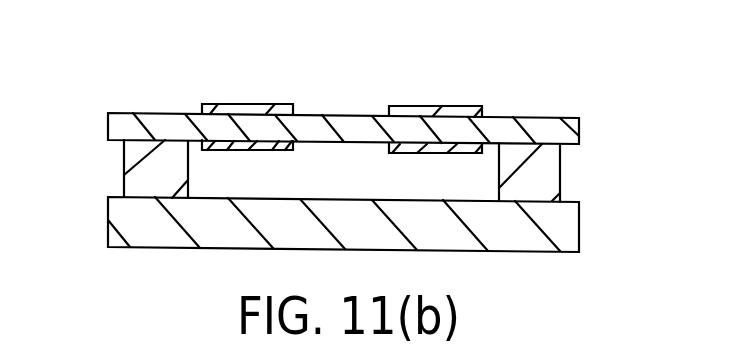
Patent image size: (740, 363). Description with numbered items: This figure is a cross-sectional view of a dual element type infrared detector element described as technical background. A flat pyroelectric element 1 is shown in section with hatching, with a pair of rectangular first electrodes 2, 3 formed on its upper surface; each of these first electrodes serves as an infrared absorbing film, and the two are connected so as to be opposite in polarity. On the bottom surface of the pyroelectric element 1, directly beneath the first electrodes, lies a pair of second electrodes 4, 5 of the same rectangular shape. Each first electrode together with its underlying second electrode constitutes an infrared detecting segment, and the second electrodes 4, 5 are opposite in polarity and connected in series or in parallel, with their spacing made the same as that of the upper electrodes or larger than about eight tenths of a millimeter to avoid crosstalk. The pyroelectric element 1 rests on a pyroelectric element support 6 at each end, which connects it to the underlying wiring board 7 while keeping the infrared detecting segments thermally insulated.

The pyroelectric element 1 is at (532, 125).
The first electrode 2 is at (213, 104).
The first electrode 3 is at (402, 110).
The second electrode 4 is at (272, 146).
The second electrode 5 is at (458, 150).
The pyroelectric element support 6 is at (133, 188).
The wiring board 7 is at (573, 227).